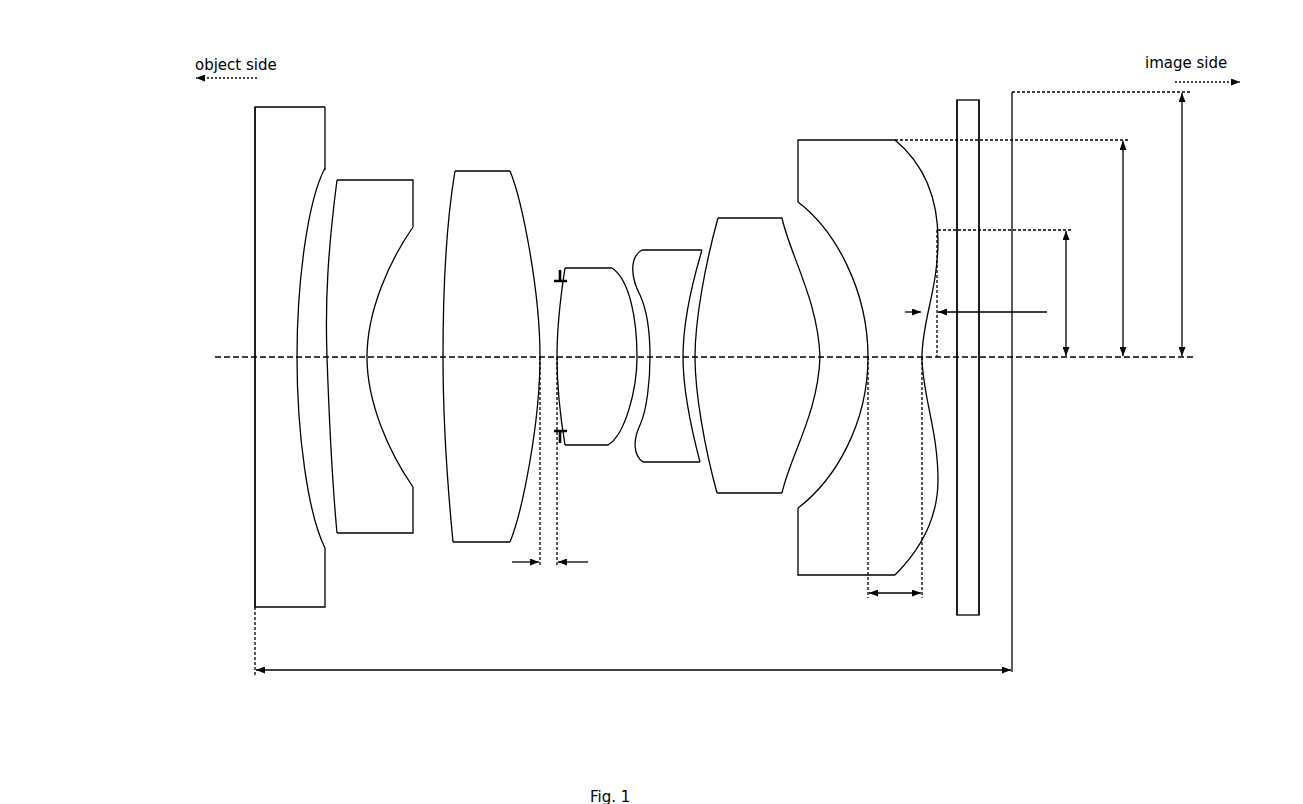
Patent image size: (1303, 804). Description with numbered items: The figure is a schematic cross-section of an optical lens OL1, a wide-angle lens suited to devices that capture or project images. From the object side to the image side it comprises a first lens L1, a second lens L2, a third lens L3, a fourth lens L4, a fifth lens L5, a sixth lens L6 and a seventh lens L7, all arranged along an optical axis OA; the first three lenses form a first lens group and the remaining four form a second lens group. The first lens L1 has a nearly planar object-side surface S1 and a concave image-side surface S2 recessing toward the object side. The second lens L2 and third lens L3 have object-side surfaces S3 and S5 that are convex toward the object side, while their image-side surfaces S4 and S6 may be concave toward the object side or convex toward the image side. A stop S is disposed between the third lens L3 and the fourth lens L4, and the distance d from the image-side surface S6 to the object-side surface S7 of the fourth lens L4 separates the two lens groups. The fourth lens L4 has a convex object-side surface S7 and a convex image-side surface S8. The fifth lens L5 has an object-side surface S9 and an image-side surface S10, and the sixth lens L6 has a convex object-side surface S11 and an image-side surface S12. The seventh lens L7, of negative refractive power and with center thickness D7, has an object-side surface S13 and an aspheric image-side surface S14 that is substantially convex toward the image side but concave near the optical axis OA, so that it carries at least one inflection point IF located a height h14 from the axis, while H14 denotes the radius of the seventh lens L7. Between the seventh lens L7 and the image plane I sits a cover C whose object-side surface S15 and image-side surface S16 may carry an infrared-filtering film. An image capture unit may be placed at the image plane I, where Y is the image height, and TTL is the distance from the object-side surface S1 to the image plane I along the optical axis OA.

The optical lens OL1 is at (180, 53).
The optical axis OA is at (1102, 360).
The first lens L1 is at (301, 378).
The second lens L2 is at (385, 367).
The third lens L3 is at (491, 365).
The fourth lens L4 is at (599, 356).
The fifth lens L5 is at (677, 349).
The sixth lens L6 is at (763, 364).
The seventh lens L7 is at (874, 381).
The stop S is at (554, 268).
The object-side surface of the first lens S1 is at (254, 178).
The image-side surface of the first lens S2 is at (316, 218).
The object-side surface of the second lens S3 is at (334, 198).
The image-side surface of the second lens S4 is at (377, 317).
The object-side surface of the third lens S5 is at (444, 261).
The image-side surface of the third lens S6 is at (518, 186).
The object-side surface of the fourth lens S7 is at (556, 296).
The image-side surface of the fourth lens S8 is at (634, 288).
The object-side surface of the fifth lens S9 is at (631, 275).
The image-side surface of the fifth lens S10 is at (705, 270).
The object-side surface of the sixth lens S11 is at (710, 242).
The image-side surface of the sixth lens S12 is at (814, 298).
The object-side surface of the seventh lens S13 is at (858, 428).
The image-side surface of the seventh lens S14 is at (933, 531).
The object-side surface of the cover S15 is at (955, 130).
The image-side surface of the cover S16 is at (981, 130).
The cover C is at (956, 362).
The image plane I is at (1013, 612).
The inflection point IF is at (939, 230).
The distance between the first lens group and the second lens group d is at (550, 472).
The thickness of the seventh lens D7 is at (895, 489).
The distance from the inflection point to the optical axis h14 is at (1019, 293).
The radius of the seventh lens H14 is at (1027, 248).
The image height Y is at (1105, 224).
The total track length TTL is at (633, 654).